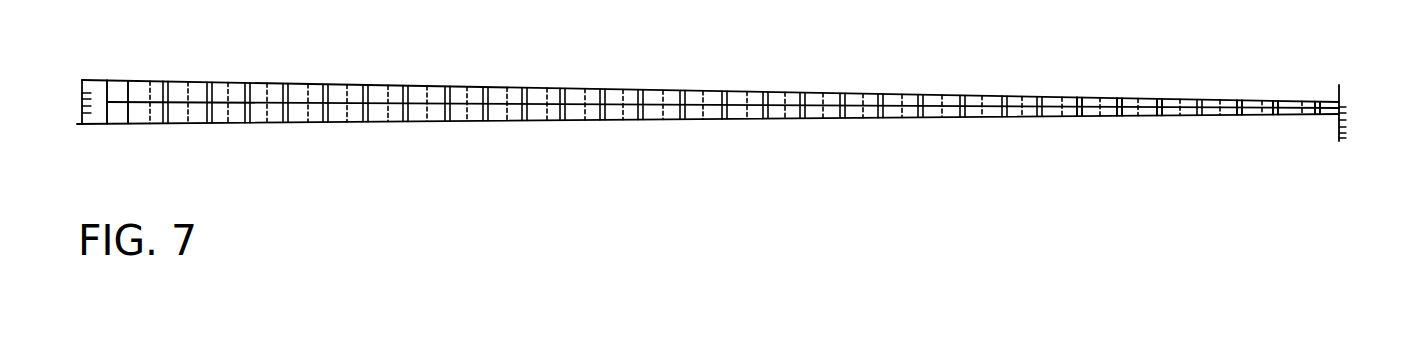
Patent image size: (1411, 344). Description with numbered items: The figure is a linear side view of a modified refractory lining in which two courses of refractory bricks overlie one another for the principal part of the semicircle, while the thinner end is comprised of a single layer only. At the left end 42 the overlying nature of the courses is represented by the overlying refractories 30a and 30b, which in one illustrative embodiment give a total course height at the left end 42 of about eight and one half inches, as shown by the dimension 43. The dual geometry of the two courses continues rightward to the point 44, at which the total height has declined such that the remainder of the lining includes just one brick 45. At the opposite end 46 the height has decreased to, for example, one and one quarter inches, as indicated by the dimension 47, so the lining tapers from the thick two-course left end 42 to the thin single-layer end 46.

The left end 42 is at (122, 137).
The dimension 43 is at (78, 96).
The overlying refractory 30a is at (138, 92).
The overlying refractory 30b is at (138, 118).
The point 44 is at (1088, 100).
The brick 45 is at (1314, 66).
The end 46 is at (1315, 122).
The dimension 47 is at (1341, 107).